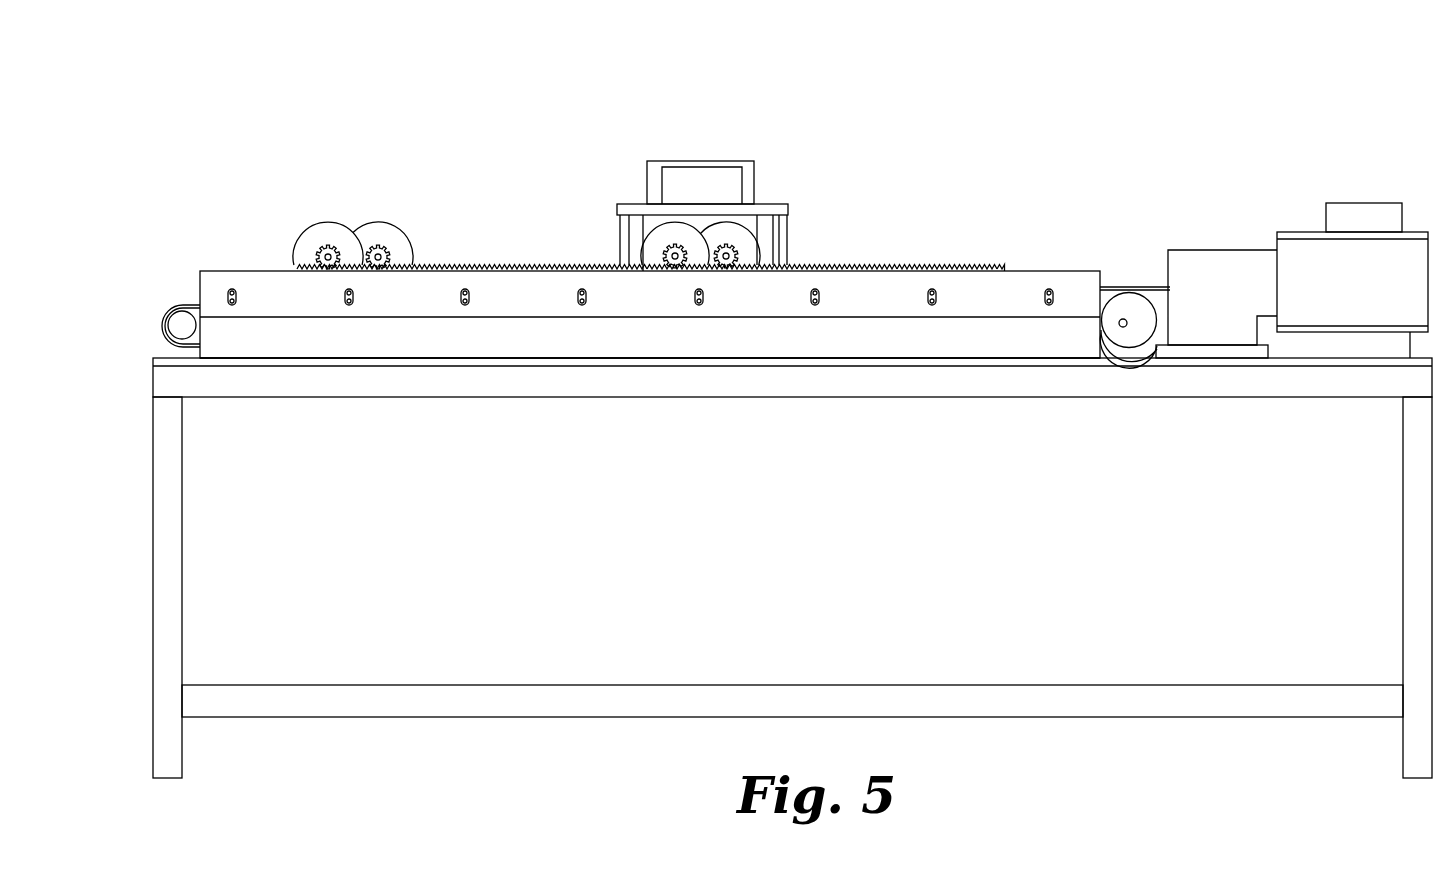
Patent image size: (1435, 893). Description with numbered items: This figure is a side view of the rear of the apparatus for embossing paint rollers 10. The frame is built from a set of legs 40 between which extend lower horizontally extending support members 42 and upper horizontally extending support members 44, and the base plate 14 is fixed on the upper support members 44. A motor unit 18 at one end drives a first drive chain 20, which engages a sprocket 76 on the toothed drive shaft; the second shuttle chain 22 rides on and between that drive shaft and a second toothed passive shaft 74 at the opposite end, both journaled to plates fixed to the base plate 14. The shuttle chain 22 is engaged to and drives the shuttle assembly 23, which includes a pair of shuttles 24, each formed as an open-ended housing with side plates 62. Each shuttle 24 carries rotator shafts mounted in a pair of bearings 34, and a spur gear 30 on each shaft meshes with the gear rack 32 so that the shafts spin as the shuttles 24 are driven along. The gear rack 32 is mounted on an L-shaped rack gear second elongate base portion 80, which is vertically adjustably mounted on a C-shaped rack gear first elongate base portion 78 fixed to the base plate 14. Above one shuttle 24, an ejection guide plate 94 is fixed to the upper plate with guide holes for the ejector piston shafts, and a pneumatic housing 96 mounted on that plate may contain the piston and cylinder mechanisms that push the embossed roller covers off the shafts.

The apparatus for embossing paint rollers 10 is at (1060, 115).
The base plate 14 is at (160, 358).
The motor unit 18 is at (1210, 296).
The first drive chain 20 is at (1145, 287).
The second shuttle chain 22 is at (190, 305).
The shuttle assembly 23 is at (506, 203).
The shuttle 24 is at (300, 233).
The spur gear 30 is at (328, 247).
The gear rack 32 is at (900, 263).
The bearings 34 is at (383, 227).
The legs 40 is at (182, 535).
The lower horizontally extending support members 42 is at (255, 685).
The upper horizontally extending support members 44 is at (260, 398).
The side plates 62 is at (619, 227).
The second toothed passive shaft 74 is at (173, 323).
The sprocket 76 is at (1120, 297).
The rack gear first elongate base portion 78 is at (1017, 345).
The rack gear second elongate base portion 80 is at (867, 298).
The ejection guide plate 94 is at (745, 160).
The pneumatic housing 96 is at (681, 173).